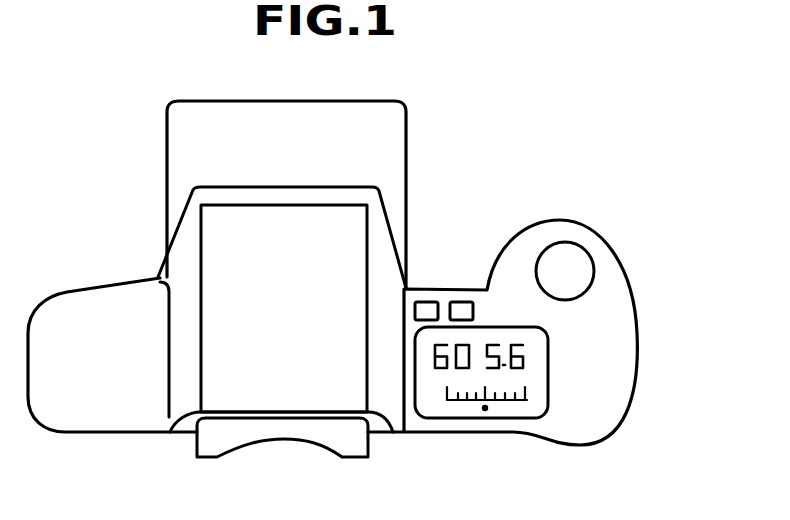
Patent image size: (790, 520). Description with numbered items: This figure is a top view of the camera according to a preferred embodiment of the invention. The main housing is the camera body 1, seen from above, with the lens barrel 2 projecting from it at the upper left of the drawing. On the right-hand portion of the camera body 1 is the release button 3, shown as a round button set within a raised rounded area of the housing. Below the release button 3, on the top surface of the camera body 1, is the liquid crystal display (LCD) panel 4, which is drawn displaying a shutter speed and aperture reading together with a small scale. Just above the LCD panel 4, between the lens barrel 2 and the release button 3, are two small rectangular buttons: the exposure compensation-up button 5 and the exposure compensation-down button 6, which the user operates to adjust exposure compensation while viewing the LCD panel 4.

The camera body 1 is at (626, 360).
The lens barrel 2 is at (400, 153).
The release button 3 is at (586, 260).
The liquid crystal display (LCD) panel 4 is at (445, 418).
The exposure compensation-up button 5 is at (421, 300).
The exposure compensation-down button 6 is at (462, 300).